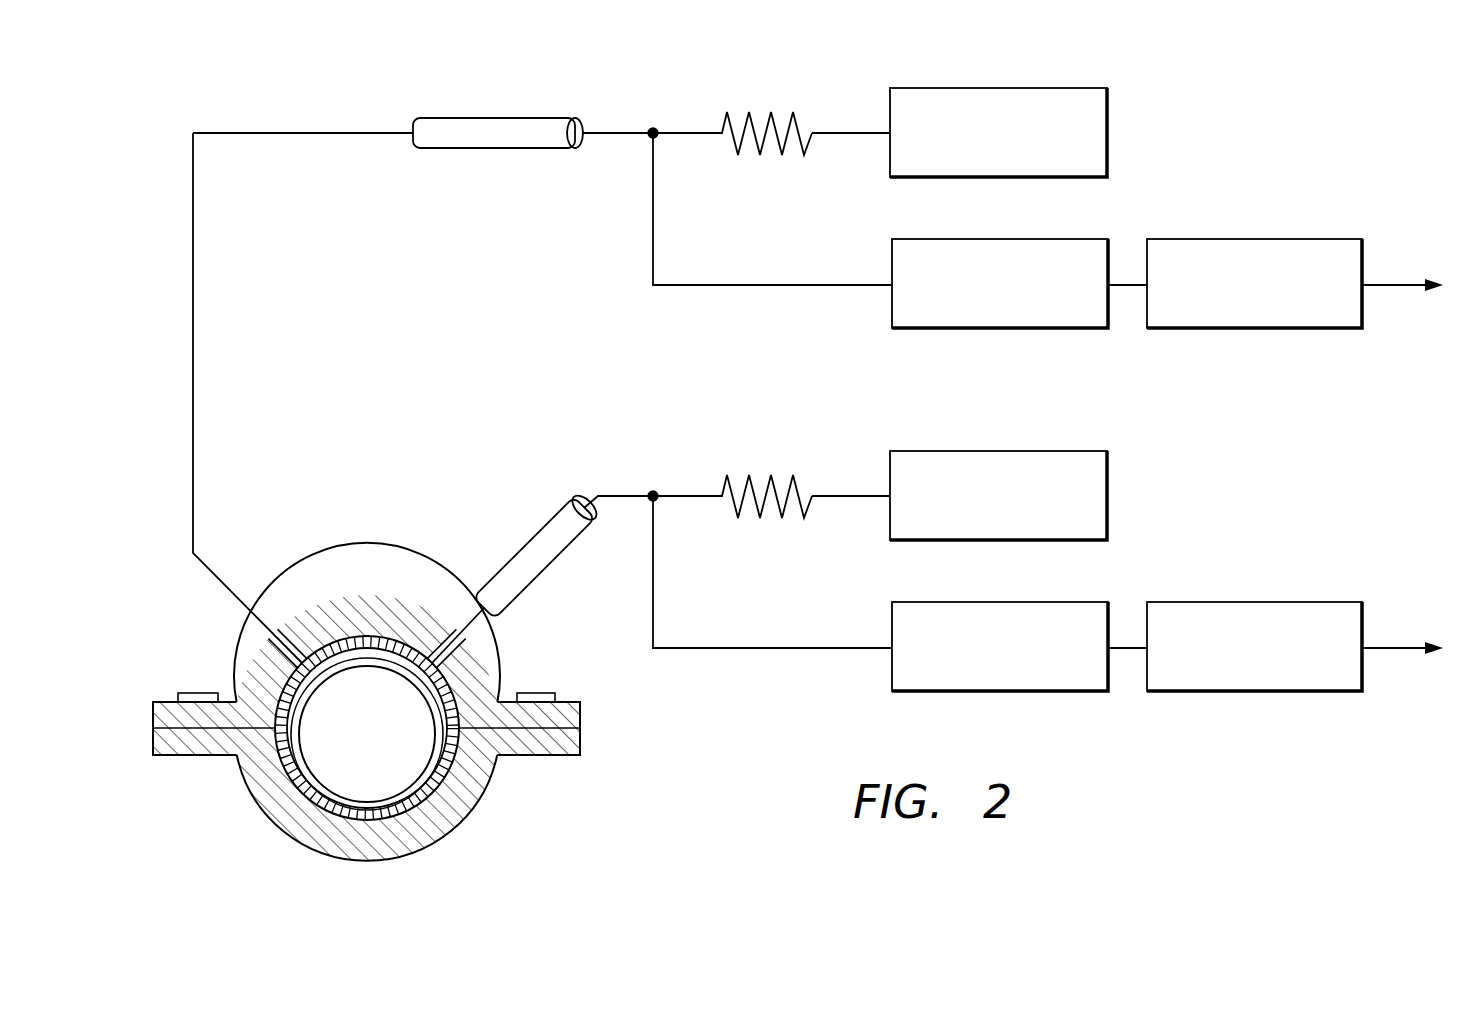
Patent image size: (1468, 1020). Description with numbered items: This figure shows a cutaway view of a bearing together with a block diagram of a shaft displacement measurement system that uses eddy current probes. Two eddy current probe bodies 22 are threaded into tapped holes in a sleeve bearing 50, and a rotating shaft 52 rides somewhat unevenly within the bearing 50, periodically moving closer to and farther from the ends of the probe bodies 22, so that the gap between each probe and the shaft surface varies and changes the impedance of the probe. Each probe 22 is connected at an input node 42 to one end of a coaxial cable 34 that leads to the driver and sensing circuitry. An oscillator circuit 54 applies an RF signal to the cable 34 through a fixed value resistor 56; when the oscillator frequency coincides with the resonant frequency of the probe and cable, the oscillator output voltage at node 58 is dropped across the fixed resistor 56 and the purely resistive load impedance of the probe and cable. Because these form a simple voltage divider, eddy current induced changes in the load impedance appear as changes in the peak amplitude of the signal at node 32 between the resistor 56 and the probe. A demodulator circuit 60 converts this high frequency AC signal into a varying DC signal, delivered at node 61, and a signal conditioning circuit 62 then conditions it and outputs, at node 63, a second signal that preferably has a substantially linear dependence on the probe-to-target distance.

The eddy current probe body 22 is at (272, 637).
The node 32 is at (655, 128).
The coaxial cable 34 is at (500, 172).
The input node 42 is at (230, 592).
The sleeve bearing 50 is at (433, 793).
The rotating shaft 52 is at (388, 726).
The oscillator circuit 54 is at (1108, 120).
The fixed value resistor 56 is at (750, 112).
The node 58 is at (857, 135).
The demodulator circuit 60 is at (1060, 239).
The node 61 is at (1123, 288).
The signal conditioning circuit 62 is at (1235, 239).
The node 63 is at (1378, 280).